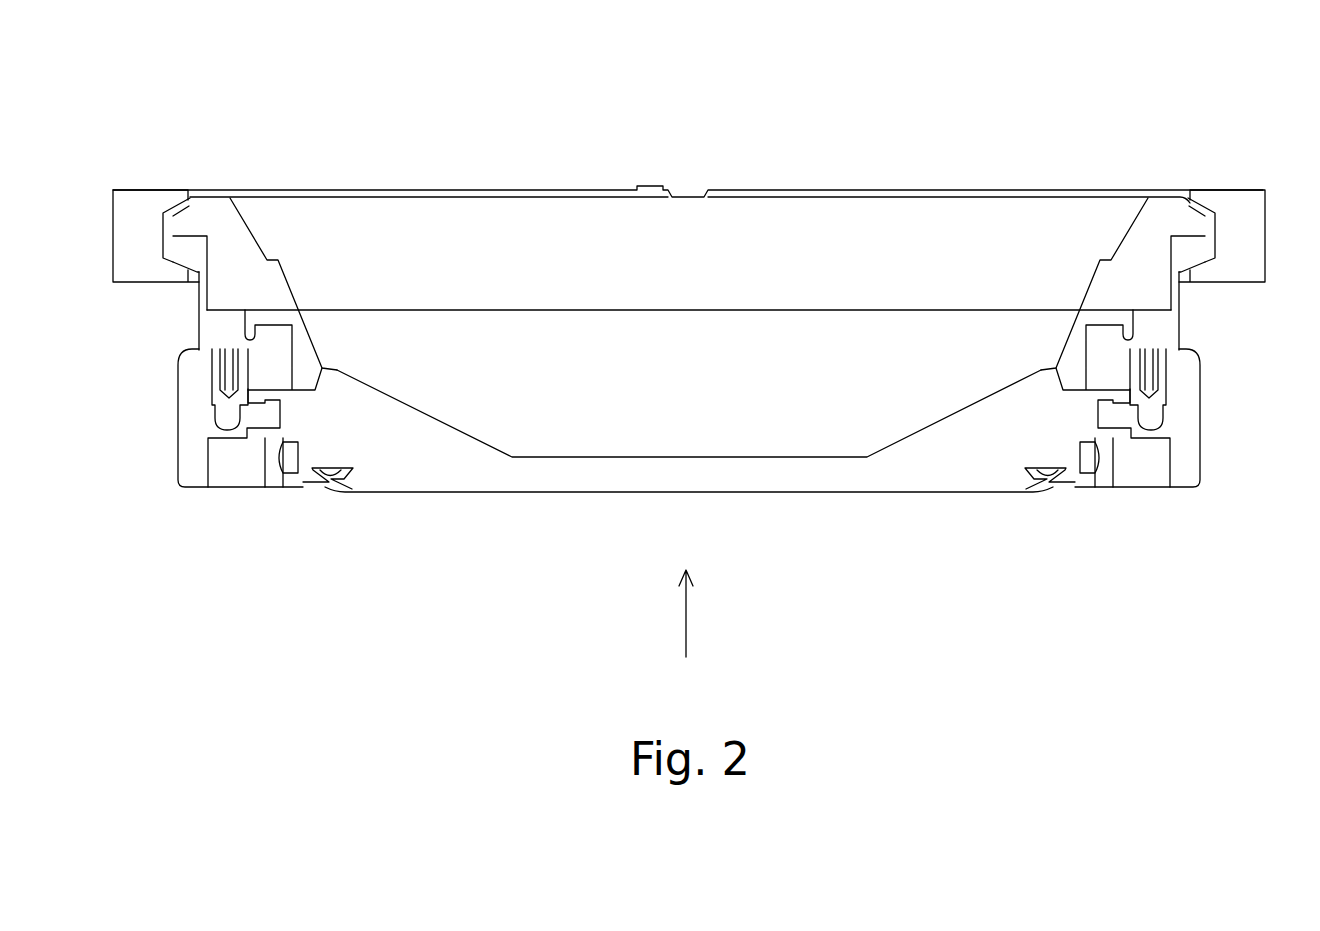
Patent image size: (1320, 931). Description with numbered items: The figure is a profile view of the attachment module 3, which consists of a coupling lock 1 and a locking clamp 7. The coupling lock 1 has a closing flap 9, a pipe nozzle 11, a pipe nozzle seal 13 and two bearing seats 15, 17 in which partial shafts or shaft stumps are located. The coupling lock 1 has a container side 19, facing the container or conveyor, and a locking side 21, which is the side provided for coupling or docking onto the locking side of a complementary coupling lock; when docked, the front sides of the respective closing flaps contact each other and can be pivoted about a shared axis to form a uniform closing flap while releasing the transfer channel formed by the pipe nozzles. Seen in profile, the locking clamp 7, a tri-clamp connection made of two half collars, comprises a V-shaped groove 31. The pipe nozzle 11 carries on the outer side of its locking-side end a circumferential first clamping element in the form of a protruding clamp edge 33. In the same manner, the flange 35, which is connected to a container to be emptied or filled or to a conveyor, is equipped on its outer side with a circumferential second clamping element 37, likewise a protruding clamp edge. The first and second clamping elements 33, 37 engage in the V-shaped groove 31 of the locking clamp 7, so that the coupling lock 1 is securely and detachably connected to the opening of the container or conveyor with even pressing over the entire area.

The attachment module 3 is at (646, 148).
The container side 19 is at (850, 190).
The second clamping element 37 is at (165, 190).
The locking clamp 7 is at (1250, 217).
The V-shaped groove 31 is at (1203, 230).
The first clamping element 33 is at (1185, 257).
The pipe nozzle 11 is at (1172, 332).
The flange 35 is at (993, 225).
The pipe nozzle seal 13 is at (817, 430).
The coupling lock 1 is at (387, 448).
The closing flap 9 is at (595, 492).
The bearing seat 17 is at (195, 457).
The bearing seat 15 is at (1185, 463).
The locking side 21 is at (1053, 487).